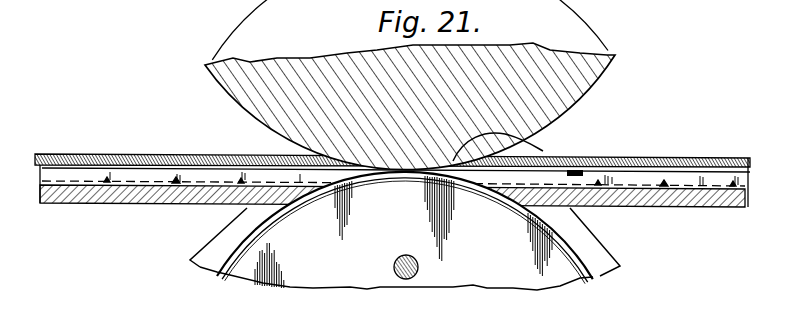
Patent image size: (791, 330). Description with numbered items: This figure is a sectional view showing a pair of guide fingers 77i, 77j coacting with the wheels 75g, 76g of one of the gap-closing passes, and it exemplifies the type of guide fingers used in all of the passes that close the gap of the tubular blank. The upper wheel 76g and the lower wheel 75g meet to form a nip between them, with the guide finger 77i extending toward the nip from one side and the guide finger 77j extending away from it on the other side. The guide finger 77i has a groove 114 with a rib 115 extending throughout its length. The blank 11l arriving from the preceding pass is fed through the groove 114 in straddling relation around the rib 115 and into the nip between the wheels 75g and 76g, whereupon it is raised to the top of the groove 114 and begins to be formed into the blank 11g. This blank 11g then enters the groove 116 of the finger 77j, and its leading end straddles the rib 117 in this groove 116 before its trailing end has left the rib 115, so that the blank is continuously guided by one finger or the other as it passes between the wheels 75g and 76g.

The wheel 76g is at (563, 64).
The wheel 75g is at (473, 272).
The guide finger 77j is at (219, 178).
The guide finger 77i is at (577, 178).
The groove 116 is at (238, 158).
The rib 117 is at (207, 185).
The upper layer of right strip 11l is at (571, 159).
The groove 114 is at (648, 171).
The rib 115 is at (678, 202).
The blank 11g is at (515, 147).